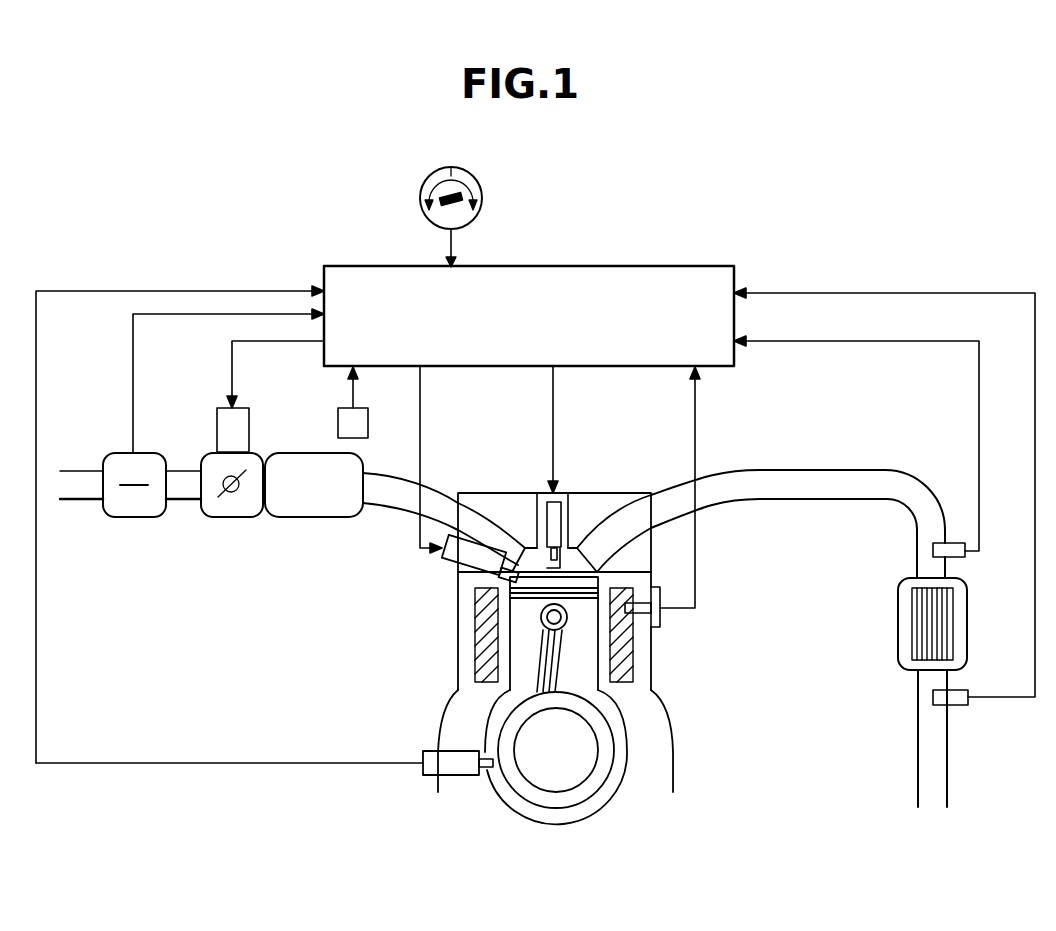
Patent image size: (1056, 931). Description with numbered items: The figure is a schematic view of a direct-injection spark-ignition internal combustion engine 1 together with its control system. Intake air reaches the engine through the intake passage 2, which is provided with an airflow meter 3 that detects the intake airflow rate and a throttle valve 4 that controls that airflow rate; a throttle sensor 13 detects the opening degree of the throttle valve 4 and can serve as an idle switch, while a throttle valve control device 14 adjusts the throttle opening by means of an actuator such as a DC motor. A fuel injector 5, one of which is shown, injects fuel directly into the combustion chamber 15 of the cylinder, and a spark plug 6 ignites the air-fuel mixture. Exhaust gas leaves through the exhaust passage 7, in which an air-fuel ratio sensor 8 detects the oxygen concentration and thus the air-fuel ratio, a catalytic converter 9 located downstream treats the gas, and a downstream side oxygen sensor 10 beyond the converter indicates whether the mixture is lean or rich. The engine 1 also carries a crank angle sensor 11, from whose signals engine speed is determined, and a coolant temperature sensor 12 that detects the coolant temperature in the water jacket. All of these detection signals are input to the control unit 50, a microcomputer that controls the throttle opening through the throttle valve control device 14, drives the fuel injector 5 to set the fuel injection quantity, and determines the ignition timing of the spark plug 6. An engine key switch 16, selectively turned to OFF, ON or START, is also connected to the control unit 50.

The direct-injection spark-ignition internal combustion engine 1 is at (442, 648).
The intake passage 2 is at (80, 500).
The airflow meter 3 is at (133, 517).
The throttle valve 4 is at (233, 517).
The fuel injector 5 is at (452, 560).
The spark plug 6 is at (563, 512).
The exhaust passage 7 is at (806, 468).
The air-fuel ratio sensor 8 is at (965, 556).
The catalytic converter 9 is at (898, 605).
The downstream side oxygen sensor 10 is at (968, 705).
The crank angle sensor 11 is at (432, 751).
The coolant temperature sensor 12 is at (660, 622).
The throttle sensor 13 is at (368, 420).
The throttle valve control device 14 is at (217, 437).
The combustion chamber 15 is at (578, 626).
The engine key switch 16 is at (420, 200).
The control unit 50 is at (686, 266).